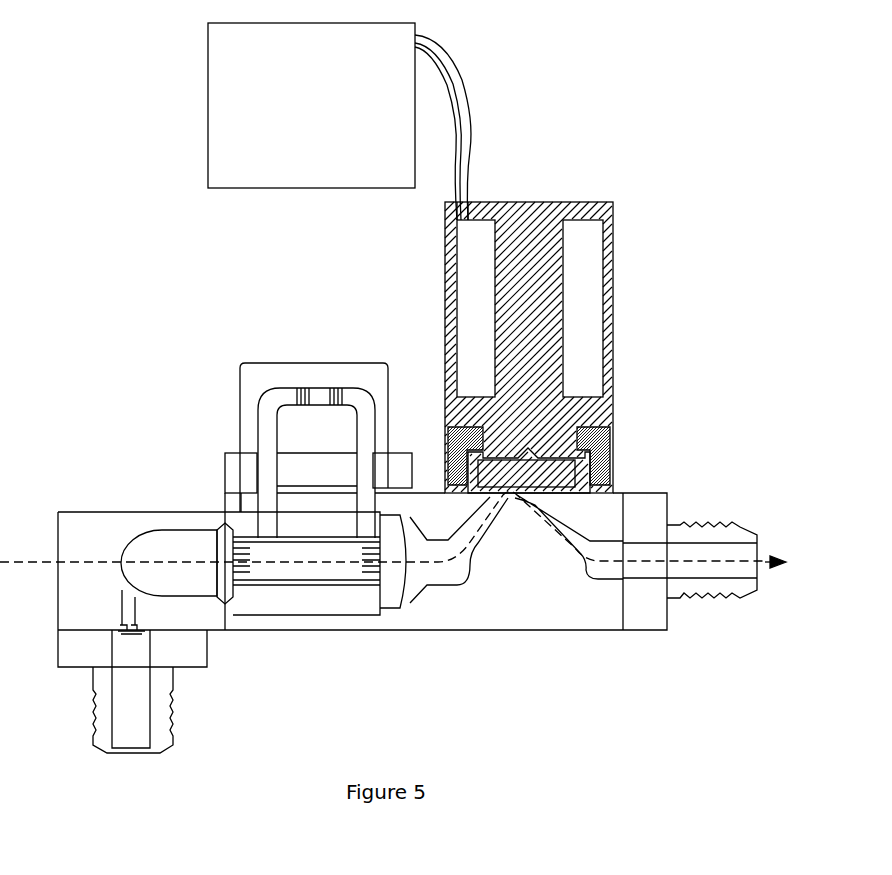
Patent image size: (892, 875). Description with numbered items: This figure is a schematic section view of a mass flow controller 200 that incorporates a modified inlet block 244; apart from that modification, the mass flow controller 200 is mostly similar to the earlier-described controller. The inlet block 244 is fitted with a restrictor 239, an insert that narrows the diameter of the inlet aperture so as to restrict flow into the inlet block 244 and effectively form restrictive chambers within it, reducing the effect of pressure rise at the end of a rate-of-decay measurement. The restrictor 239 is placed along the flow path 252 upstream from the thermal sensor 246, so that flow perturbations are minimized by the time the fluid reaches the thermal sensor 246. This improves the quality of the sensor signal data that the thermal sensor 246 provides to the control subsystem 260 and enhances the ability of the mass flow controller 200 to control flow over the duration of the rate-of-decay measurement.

The mass flow controller 200 is at (148, 166).
The control subsystem 260 is at (339, 121).
The inlet block 244 is at (90, 530).
The restrictor 239 is at (147, 633).
The flow path 252 is at (676, 558).
The thermal sensor 246 is at (358, 372).